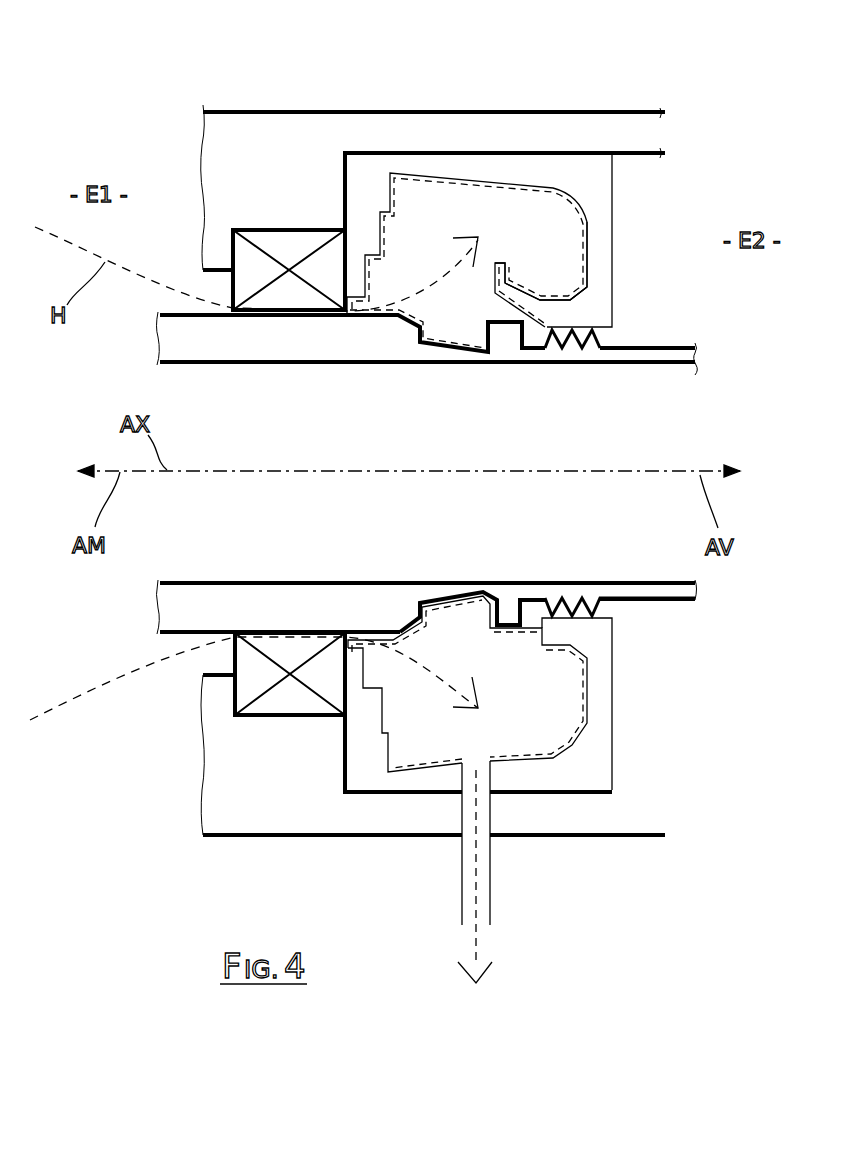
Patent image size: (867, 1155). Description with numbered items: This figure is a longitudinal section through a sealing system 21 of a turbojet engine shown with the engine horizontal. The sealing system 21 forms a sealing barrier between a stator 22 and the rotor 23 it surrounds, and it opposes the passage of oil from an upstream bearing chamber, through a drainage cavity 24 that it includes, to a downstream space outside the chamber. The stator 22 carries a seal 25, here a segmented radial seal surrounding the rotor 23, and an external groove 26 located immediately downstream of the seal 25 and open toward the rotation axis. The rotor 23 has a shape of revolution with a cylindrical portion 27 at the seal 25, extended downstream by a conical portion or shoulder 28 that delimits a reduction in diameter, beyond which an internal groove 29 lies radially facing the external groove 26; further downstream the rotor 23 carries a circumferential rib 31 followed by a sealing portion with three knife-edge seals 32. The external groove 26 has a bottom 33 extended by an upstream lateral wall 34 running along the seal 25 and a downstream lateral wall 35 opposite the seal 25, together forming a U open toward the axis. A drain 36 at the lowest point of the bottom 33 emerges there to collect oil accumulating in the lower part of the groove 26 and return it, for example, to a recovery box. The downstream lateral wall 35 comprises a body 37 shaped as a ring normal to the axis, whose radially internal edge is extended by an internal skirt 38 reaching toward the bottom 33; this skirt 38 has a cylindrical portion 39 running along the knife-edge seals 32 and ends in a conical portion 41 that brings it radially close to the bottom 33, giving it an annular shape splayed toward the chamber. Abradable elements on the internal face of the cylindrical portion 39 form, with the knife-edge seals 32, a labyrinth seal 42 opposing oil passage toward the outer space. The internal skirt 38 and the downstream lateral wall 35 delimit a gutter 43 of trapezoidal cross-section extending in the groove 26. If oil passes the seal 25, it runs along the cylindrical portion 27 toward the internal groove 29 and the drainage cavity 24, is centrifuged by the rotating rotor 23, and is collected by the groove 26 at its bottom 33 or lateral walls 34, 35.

The sealing system 21 is at (148, 96).
The stator 22 is at (325, 820).
The rotor 23 is at (213, 600).
The drainage cavity 24 is at (256, 260).
The seal 25 is at (283, 695).
The external groove 26 is at (540, 786).
The cylindrical portion 27 is at (220, 635).
The conical portion or shoulder 28 is at (407, 620).
The internal groove 29 is at (443, 584).
The circumferential rib 31 is at (505, 610).
The knife-edge seals 32 is at (573, 600).
The bottom 33 is at (470, 165).
The upstream lateral wall 34 is at (360, 205).
The downstream lateral wall 35 is at (605, 295).
The drain 36 is at (470, 883).
The body 37 is at (600, 247).
The internal skirt 38 is at (545, 352).
The cylindrical portion 39 is at (572, 303).
The conical portion 41 is at (518, 283).
The labyrinth seal 42 is at (618, 337).
The gutter 43 is at (535, 276).